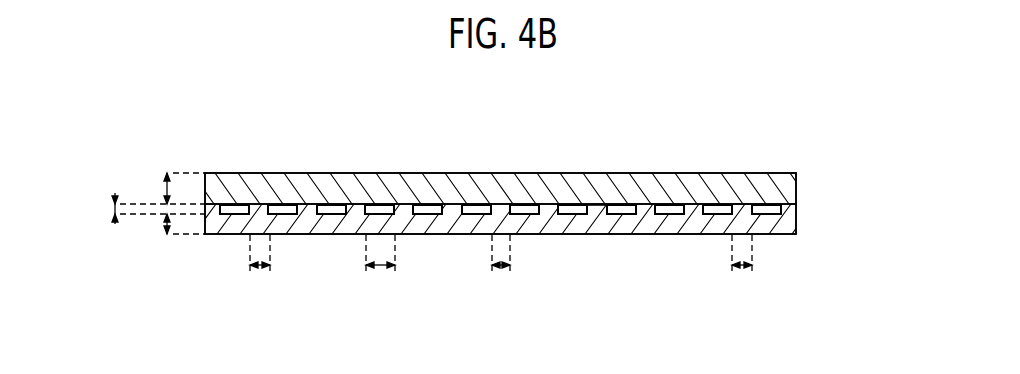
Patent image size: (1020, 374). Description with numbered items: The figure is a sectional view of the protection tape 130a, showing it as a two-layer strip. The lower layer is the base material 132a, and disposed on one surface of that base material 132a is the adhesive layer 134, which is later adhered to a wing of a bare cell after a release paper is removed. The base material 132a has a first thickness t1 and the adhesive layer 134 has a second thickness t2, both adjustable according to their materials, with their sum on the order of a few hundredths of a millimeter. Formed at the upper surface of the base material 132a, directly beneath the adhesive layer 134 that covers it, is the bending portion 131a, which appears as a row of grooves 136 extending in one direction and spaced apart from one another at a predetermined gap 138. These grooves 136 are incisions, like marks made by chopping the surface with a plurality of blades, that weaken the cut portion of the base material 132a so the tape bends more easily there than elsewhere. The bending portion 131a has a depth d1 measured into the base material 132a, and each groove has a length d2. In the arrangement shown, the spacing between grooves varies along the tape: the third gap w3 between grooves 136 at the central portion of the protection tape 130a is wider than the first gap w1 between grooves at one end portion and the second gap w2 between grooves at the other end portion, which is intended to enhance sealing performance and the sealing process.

The protection tape 130a is at (195, 133).
The adhesive layer 134 is at (796, 191).
The base material 132a is at (796, 223).
The grooves 136 is at (625, 207).
The gap 138 is at (597, 207).
The bending portion 131a is at (718, 196).
The first thickness t1 is at (166, 227).
The second thickness t2 is at (166, 187).
The depth d1 is at (112, 211).
The length d2 is at (380, 282).
The first gap w1 is at (260, 282).
The second gap w2 is at (742, 282).
The third gap w3 is at (501, 282).